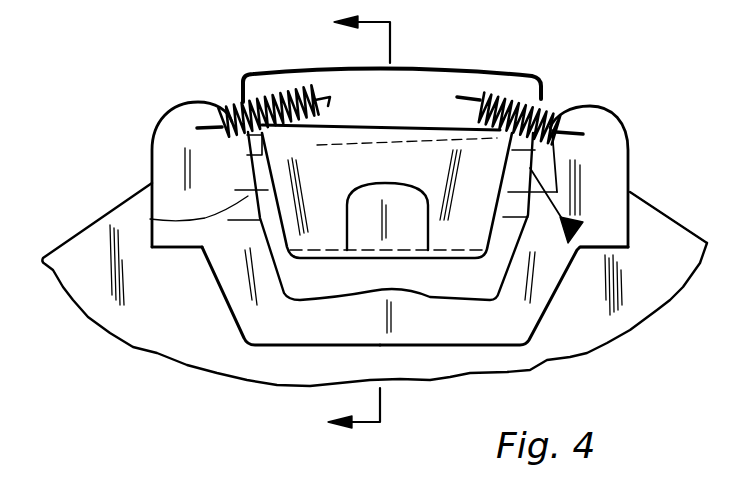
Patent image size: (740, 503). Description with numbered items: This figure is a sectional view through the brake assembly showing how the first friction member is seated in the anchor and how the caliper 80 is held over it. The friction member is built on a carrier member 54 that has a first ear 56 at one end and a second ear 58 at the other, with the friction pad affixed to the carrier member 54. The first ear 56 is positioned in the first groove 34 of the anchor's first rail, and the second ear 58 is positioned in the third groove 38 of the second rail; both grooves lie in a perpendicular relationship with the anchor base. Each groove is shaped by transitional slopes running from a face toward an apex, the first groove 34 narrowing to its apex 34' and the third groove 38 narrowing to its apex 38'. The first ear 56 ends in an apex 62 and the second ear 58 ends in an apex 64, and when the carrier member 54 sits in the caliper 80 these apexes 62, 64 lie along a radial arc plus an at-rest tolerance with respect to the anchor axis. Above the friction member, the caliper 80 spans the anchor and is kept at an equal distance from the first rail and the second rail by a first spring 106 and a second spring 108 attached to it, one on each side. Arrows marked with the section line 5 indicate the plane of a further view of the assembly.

The section line 5- 5 is at (359, 227).
The first groove 34 is at (269, 282).
The apex of first groove 34' is at (170, 263).
The third groove 38 is at (526, 293).
The apex of third groove 38' is at (676, 217).
The carrier member 54 is at (361, 232).
The first ear 56 is at (248, 216).
The second ear 58 is at (520, 212).
The apex of first end 62 is at (120, 213).
The apex of second end 64 is at (545, 217).
The caliper 80 is at (480, 61).
The first spring 106 is at (238, 103).
The second spring 108 is at (553, 106).